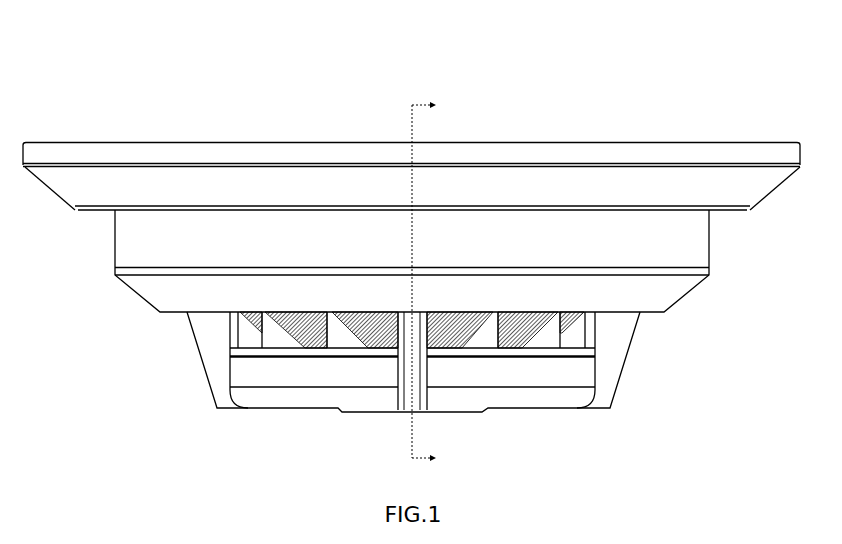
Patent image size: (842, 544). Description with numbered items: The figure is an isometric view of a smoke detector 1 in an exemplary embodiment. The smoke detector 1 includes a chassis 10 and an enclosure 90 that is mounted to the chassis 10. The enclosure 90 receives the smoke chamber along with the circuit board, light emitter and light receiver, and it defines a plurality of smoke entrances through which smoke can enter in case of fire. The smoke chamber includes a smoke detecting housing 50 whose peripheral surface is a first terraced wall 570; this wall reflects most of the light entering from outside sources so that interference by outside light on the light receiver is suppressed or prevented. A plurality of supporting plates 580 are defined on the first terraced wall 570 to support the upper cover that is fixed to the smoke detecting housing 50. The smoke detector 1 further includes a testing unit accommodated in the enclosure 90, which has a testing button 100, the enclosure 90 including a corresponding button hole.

The smoke detector 1 is at (402, 39).
The chassis 10 is at (232, 145).
The enclosure 90 is at (170, 253).
The testing button 100 is at (468, 415).
The smoke detecting housing 50 is at (563, 333).
The supporting plates 580 is at (278, 335).
The first terraced wall 570 is at (350, 330).